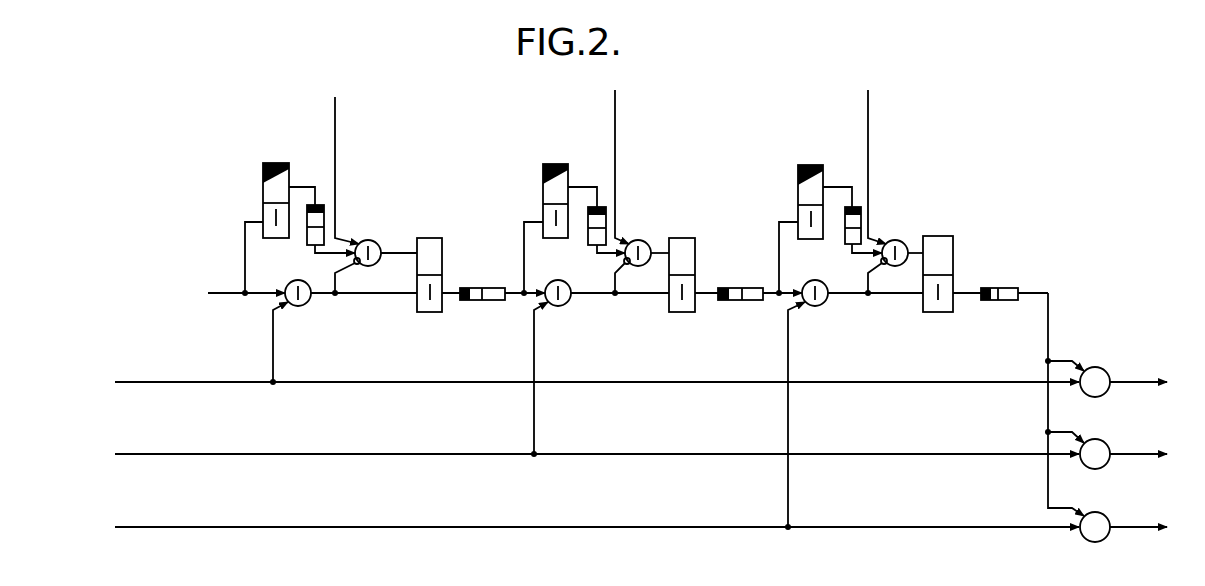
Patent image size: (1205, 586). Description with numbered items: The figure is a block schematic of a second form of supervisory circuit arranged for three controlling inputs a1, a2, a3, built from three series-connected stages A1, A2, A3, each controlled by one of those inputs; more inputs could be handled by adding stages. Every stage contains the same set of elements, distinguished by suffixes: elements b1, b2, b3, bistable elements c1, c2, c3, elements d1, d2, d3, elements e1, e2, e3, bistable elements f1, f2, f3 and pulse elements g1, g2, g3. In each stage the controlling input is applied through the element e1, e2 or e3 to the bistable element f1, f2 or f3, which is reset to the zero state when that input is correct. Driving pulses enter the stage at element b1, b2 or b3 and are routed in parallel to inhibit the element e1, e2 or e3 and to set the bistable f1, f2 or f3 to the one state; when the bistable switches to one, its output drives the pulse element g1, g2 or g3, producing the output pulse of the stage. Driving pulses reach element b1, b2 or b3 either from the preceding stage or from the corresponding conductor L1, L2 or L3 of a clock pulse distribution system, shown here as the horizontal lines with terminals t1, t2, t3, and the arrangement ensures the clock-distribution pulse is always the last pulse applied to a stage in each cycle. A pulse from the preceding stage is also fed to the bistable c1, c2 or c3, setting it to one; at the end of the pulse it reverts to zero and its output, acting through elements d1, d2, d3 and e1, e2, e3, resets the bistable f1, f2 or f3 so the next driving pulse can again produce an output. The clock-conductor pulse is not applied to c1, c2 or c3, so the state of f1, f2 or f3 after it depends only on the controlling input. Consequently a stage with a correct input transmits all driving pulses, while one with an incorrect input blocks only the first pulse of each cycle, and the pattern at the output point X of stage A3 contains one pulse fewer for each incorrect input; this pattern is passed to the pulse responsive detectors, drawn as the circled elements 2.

The controlling input a1 is at (352, 159).
The controlling input a2 is at (632, 159).
The controlling input a3 is at (885, 159).
The element b b1 is at (297, 343).
The element b b2 is at (560, 379).
The element b b3 is at (816, 416).
The bistable element c c1 is at (284, 207).
The bistable element c c2 is at (565, 208).
The bistable element c c3 is at (820, 208).
The element d d1 is at (293, 275).
The element d d2 is at (561, 275).
The element d d3 is at (818, 275).
The element e e1 is at (366, 250).
The element e e2 is at (633, 250).
The element e e3 is at (887, 250).
The bistable element f f1 is at (430, 258).
The bistable element f f2 is at (688, 258).
The bistable element f f3 is at (941, 258).
The pulse element g g1 is at (482, 278).
The pulse element g g2 is at (740, 278).
The pulse element g g3 is at (999, 278).
The stage A1 is at (376, 325).
The stage A2 is at (686, 326).
The stage A3 is at (938, 326).
The timing line t1 is at (342, 379).
The timing line t2 is at (342, 450).
The timing line t3 is at (342, 525).
The clock pulse distribution conductor L1 is at (765, 367).
The clock pulse distribution conductor L2 is at (765, 437).
The clock pulse distribution conductor L3 is at (765, 510).
The output point X is at (1064, 398).
The output AND gates 2 is at (1123, 454).